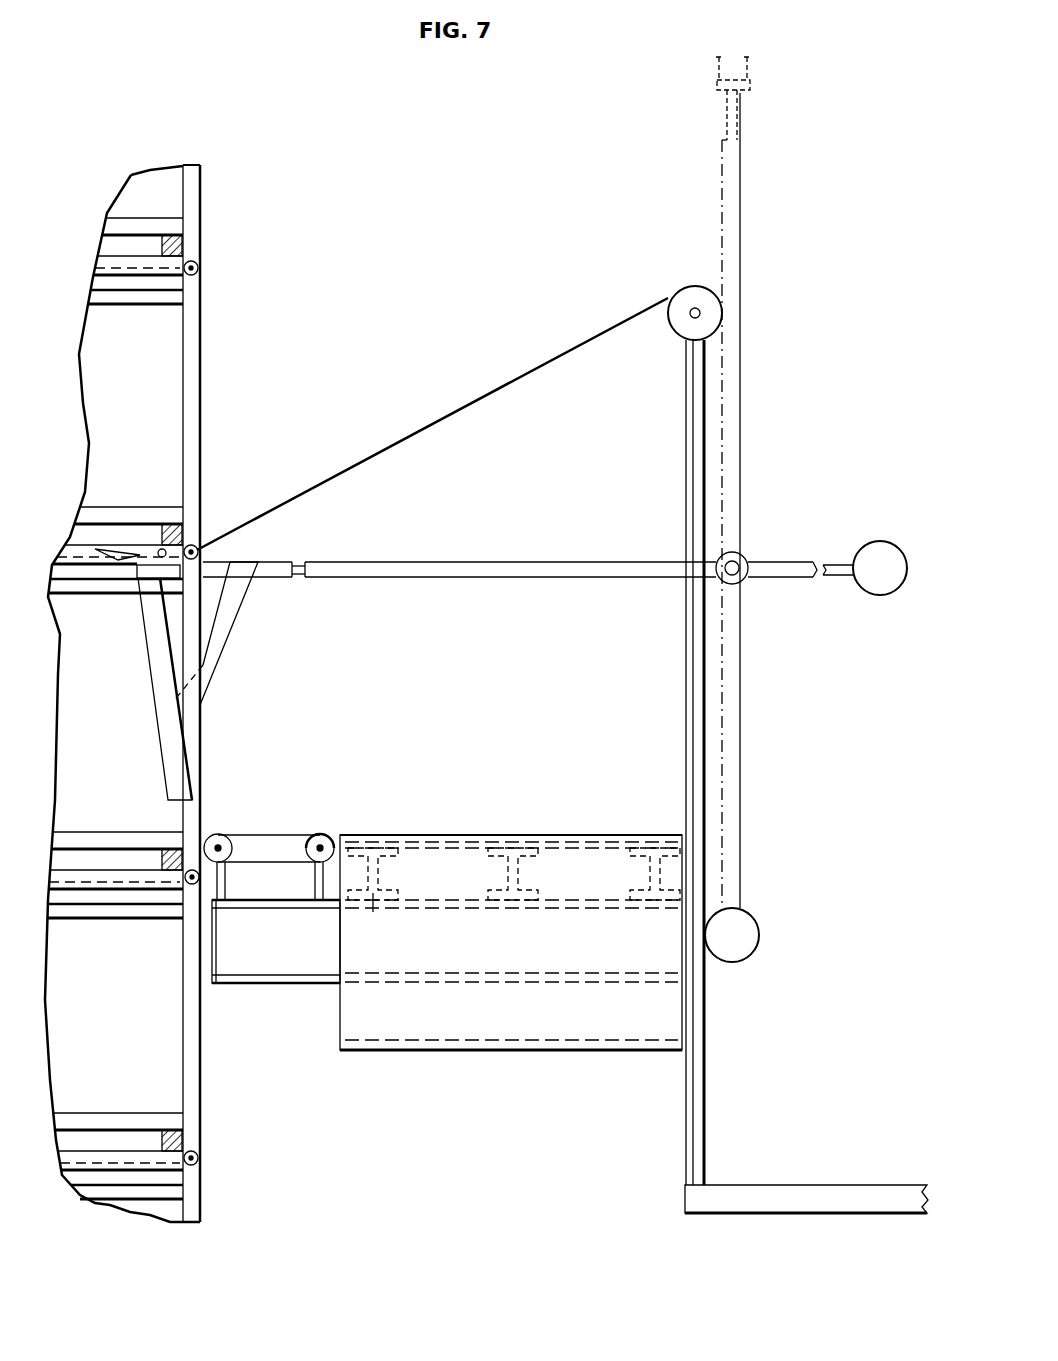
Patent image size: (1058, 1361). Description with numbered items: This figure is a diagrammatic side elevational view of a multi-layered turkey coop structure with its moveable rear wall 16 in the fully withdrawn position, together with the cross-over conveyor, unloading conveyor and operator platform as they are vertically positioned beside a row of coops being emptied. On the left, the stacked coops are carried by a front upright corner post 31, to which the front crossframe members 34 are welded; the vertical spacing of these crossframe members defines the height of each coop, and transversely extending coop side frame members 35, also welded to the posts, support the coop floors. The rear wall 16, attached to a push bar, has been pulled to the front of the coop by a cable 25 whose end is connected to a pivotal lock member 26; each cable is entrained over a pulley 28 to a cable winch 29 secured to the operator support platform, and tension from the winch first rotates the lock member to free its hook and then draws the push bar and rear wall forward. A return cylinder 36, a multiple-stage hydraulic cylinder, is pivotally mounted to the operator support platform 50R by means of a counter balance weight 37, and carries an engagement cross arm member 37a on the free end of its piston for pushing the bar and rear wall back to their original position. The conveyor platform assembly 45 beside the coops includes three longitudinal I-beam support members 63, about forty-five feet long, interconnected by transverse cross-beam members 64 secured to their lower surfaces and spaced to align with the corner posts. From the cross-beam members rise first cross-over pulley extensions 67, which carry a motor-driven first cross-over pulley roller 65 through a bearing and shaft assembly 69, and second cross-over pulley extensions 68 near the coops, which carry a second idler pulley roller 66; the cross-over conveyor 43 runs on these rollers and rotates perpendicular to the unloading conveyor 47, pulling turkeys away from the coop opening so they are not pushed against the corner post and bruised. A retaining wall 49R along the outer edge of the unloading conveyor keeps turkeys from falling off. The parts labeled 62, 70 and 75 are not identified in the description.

The rear wall 16 is at (168, 749).
The cable 25 is at (358, 474).
The lock member 26 is at (126, 548).
The pulley 28 is at (198, 271).
The cable winch 29 is at (689, 295).
The front upright corner post 31 is at (200, 365).
The crossframe member 34 is at (185, 252).
The coop side frame member 35 is at (143, 226).
The return cylinder 36 is at (522, 561).
The counter balance weight 37 is at (880, 543).
The engagement cross arm member 37a is at (240, 626).
The cross-over conveyor 43 is at (286, 832).
The conveyor platform assembly 45 is at (551, 762).
The unloading conveyor 47 is at (484, 836).
The retaining wall 49R is at (688, 432).
The operator support platform 50R is at (855, 1185).
The housing 62 is at (612, 838).
The I-beam support member 63 is at (537, 850).
The transverse cross-beam member 64 is at (297, 958).
The first cross-over pulley roller 65 is at (320, 834).
The second cross-over idler pulley roller 66 is at (230, 838).
The first cross-over pulley support frame extension 67 is at (314, 883).
The second cross-over pulley extension 68 is at (226, 883).
The bearing and shaft assembly 69 is at (333, 840).
The belt 70 is at (230, 850).
The pin 75 is at (380, 912).